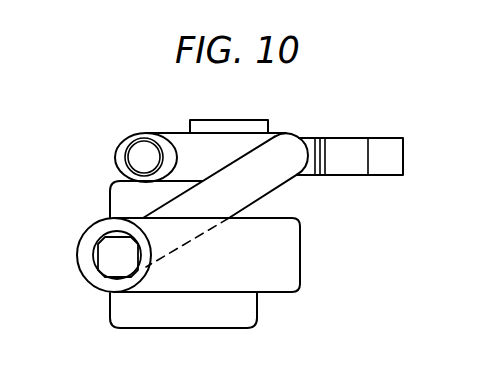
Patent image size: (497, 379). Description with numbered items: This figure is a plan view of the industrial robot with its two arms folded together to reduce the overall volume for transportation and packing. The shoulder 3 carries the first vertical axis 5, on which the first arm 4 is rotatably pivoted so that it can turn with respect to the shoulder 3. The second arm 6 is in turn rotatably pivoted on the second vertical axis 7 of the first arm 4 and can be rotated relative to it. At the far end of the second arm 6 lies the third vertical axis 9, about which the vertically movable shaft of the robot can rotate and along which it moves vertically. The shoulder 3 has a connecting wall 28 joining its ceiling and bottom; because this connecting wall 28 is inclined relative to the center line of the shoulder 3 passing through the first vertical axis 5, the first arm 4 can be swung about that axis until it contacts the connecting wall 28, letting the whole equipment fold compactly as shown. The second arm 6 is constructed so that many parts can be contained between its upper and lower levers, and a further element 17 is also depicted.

The shoulder 3 is at (288, 267).
The first arm 4 is at (277, 177).
The first vertical axis 5 is at (113, 262).
The second arm 6 is at (213, 148).
The second vertical axis 7 is at (287, 152).
The third vertical axis 9 is at (143, 153).
The end fitting 17 is at (358, 150).
The connecting wall 28 is at (199, 238).